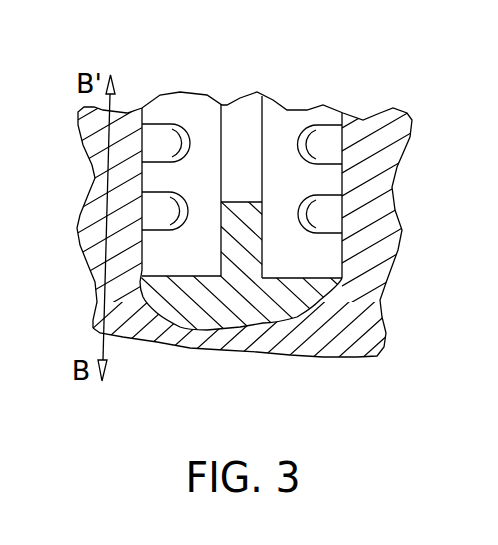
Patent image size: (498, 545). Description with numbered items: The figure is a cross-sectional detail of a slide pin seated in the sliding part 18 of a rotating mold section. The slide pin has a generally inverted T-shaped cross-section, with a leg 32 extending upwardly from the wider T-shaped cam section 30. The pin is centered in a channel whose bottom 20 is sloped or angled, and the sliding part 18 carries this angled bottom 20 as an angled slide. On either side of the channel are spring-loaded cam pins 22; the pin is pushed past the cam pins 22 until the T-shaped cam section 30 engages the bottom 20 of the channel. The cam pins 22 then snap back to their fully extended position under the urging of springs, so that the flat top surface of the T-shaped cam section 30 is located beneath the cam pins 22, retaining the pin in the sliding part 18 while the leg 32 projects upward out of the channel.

The sliding part 18 is at (80, 240).
The bottom of the channel 20 is at (190, 323).
The cam pins 22 is at (242, 129).
The T-shaped cam section 30 is at (265, 280).
The leg 32 is at (241, 226).